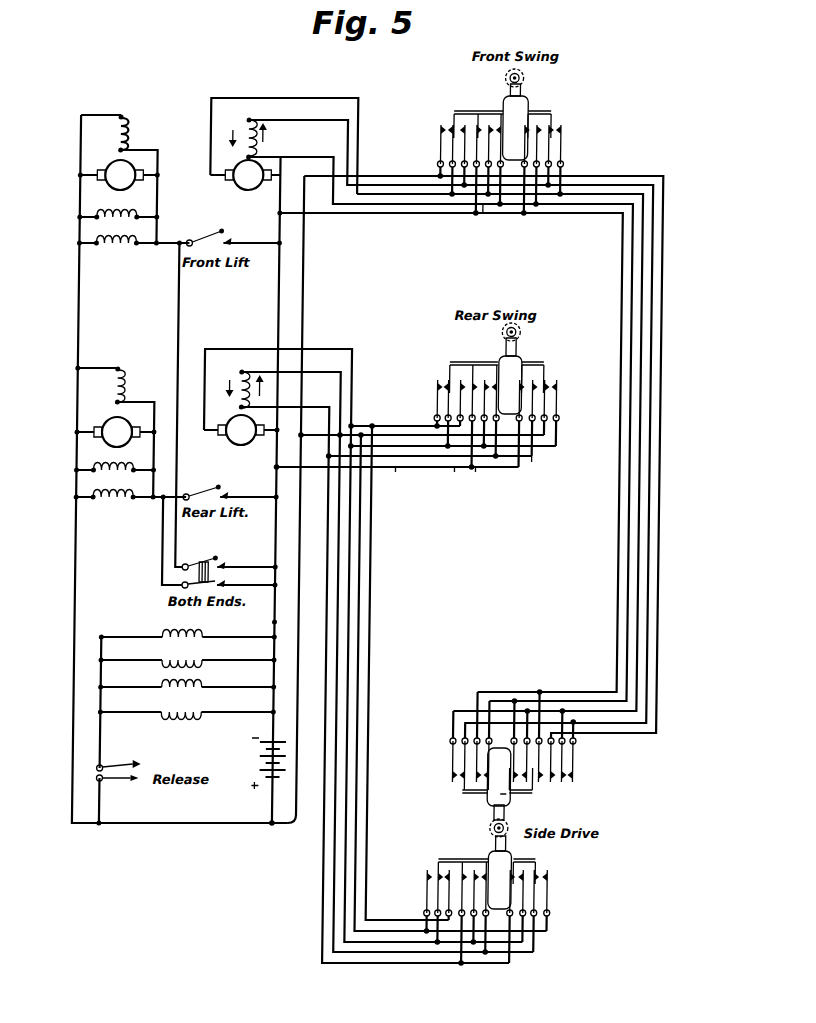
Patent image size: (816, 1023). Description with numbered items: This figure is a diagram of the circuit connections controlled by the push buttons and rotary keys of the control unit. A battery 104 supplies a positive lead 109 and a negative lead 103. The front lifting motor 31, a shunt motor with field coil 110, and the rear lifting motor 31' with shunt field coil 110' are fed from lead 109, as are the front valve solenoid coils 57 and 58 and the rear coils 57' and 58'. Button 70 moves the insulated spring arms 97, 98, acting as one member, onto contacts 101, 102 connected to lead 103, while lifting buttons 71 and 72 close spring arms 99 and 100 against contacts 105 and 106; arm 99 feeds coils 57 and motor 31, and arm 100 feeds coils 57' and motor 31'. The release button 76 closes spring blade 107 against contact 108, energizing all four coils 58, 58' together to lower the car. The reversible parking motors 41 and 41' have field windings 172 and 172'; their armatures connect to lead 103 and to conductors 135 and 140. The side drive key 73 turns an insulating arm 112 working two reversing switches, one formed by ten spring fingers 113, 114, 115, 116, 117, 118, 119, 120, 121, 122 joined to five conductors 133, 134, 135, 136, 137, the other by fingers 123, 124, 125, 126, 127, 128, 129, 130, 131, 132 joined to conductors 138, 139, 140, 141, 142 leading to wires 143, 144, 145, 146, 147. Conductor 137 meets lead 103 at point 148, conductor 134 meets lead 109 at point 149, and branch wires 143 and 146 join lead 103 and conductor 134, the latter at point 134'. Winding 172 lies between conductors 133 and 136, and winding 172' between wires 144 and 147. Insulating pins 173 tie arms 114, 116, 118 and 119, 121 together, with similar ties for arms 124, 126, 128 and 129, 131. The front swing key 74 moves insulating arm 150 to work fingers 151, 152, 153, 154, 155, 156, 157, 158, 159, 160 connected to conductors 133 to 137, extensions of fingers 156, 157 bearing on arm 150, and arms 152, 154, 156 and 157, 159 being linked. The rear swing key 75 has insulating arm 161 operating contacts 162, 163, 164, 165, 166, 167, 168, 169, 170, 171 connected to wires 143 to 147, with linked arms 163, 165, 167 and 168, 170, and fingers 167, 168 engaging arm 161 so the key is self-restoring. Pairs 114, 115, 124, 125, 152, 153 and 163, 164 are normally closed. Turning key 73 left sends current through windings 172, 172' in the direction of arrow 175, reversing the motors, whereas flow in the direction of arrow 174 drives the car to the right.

The positive battery lead 109 is at (80, 293).
The field coil 110 is at (121, 173).
The front lifting motor 31 is at (119, 177).
The solenoid coil 57 is at (117, 228).
The spring switch arm 99 is at (191, 240).
The push button 71 is at (223, 232).
The contact 105 is at (233, 240).
The field winding 172 is at (284, 129).
The arrow 175 is at (232, 130).
The arrow 174 is at (264, 146).
The front parking motor 41 is at (239, 182).
The connection point 148 is at (276, 211).
The negative battery lead 103 is at (280, 286).
The branch wire 147 is at (272, 349).
The conductor 134 is at (475, 499).
The conductor 133 is at (318, 118).
The conductor 135 is at (357, 98).
The conductor 136 is at (405, 214).
The conductor 137 is at (486, 218).
The front swing key 74 is at (524, 76).
The insulating arm 150 is at (521, 91).
The switch arm 156 is at (528, 112).
The switch arm 157 is at (552, 113).
The contact finger 151 is at (442, 131).
The switch arm 152 is at (444, 127).
The contact finger 153 is at (465, 150).
The switch arm 154 is at (476, 133).
The contact finger 155 is at (488, 137).
The switch arm 159 is at (560, 130).
The contact finger 160 is at (558, 149).
The contact finger 158 is at (550, 152).
The shunt field coil 110' is at (119, 432).
The rear lifting motor 31' is at (115, 434).
The solenoid coil 57' is at (111, 481).
The spring switch arm 100 is at (191, 494).
The push button 72 is at (223, 487).
The contact 106 is at (232, 495).
The switch arm 97 is at (191, 562).
The switch arm 98 is at (164, 578).
The push button 70 is at (220, 557).
The contact 101 is at (230, 564).
The contact 102 is at (230, 585).
The field winding 172' is at (212, 416).
The rear parking motor 41' is at (242, 439).
The conductor 140 is at (252, 353).
The conductor 138 is at (332, 929).
The conductor 139 is at (343, 898).
The conductor 141 is at (372, 573).
The conductor 142 is at (378, 546).
The connection point 134' is at (421, 409).
The branch wire 146 is at (396, 431).
The rear swing key 75 is at (503, 328).
The insulating arm 161 is at (519, 343).
The switch arm 167 is at (525, 366).
The switch arm 163 is at (452, 364).
The switch arm 168 is at (548, 363).
The contact 162 is at (440, 387).
The switch arm 165 is at (463, 385).
The contact 166 is at (481, 391).
The switch arm 170 is at (546, 380).
The contact 171 is at (558, 397).
The contact 169 is at (546, 412).
The branch wire 145 is at (544, 456).
The branch wire 143 is at (399, 470).
The contact 164 is at (458, 470).
The branch wire 144 is at (479, 470).
The solenoid coil 58 is at (187, 671).
The solenoid coil 58' is at (186, 724).
The movable switch arm 107 is at (131, 766).
The release button 76 is at (148, 764).
The contact 108 is at (118, 788).
The battery 104 is at (267, 757).
The connection point 149 is at (277, 827).
The side drive key 73 is at (497, 829).
The contact finger 122 is at (457, 742).
The switch arm 121 is at (470, 760).
The contact finger 120 is at (482, 768).
The switch arm 119 is at (497, 787).
The switch arm 118 is at (510, 795).
The contact finger 117 is at (506, 756).
The switch arm 116 is at (539, 760).
The contact finger 115 is at (578, 755).
The switch arm 114 is at (576, 762).
The contact finger 113 is at (580, 778).
The insulating pins 173 is at (566, 797).
The insulating arm 112 is at (521, 841).
The switch arm 128 is at (501, 896).
The contact finger 123 is at (431, 881).
The switch arm 124 is at (441, 871).
The contact finger 125 is at (449, 893).
The contact finger 127 is at (477, 870).
The switch arm 126 is at (472, 898).
The switch arm 129 is at (544, 866).
The switch arm 131 is at (541, 878).
The contact finger 130 is at (529, 892).
The contact finger 132 is at (549, 904).